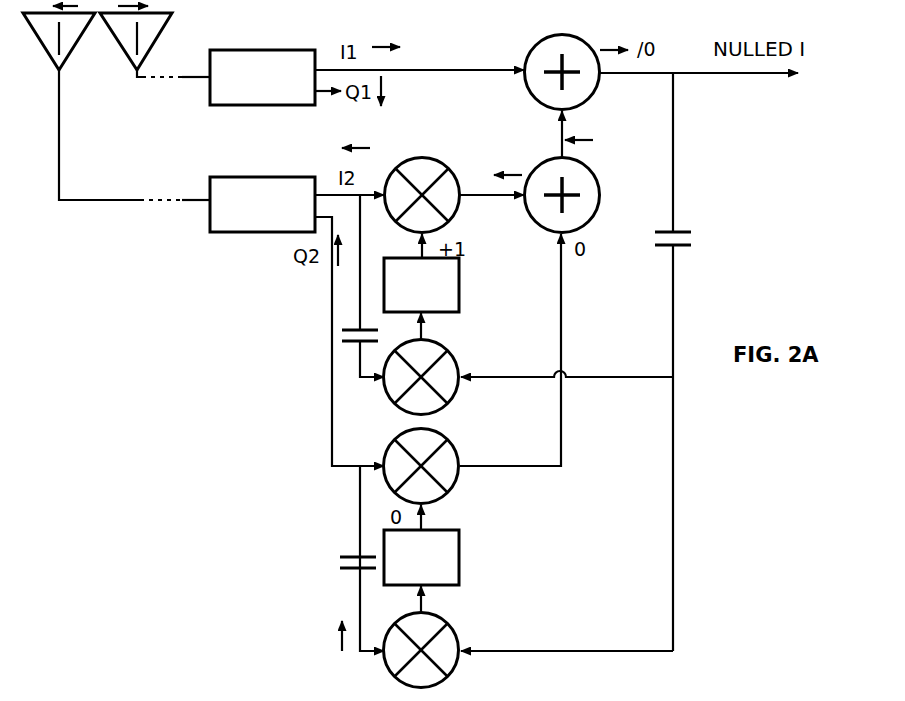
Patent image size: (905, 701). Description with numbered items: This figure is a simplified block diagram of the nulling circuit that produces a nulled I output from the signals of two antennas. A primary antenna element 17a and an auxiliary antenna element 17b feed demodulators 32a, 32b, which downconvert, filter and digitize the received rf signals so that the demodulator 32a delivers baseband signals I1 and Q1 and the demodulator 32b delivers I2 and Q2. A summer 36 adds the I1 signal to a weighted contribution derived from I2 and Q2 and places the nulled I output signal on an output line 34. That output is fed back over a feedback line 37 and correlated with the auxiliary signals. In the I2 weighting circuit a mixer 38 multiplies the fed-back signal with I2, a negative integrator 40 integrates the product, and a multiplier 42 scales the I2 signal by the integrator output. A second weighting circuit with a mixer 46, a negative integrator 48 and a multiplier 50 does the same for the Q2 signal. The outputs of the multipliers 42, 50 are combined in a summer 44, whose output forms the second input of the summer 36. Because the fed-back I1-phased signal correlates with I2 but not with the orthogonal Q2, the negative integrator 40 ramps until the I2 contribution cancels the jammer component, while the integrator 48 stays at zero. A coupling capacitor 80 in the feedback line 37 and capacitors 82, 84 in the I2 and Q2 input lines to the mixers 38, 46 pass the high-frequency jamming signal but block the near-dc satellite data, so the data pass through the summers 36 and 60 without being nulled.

The primary antenna element 17a is at (122, 60).
The auxiliary antenna element 17b is at (73, 60).
The demodulator 32a is at (228, 107).
The demodulator 32b is at (228, 234).
The nulled I output line 34 is at (690, 72).
The summer 36 is at (590, 107).
The feedback line 37 is at (673, 178).
The mixer 38 is at (447, 410).
The negative integrator 40 is at (460, 290).
The multiplier 42 is at (423, 156).
The summer 44 is at (600, 198).
The mixer 46 is at (447, 683).
The negative integrator 48 is at (460, 562).
The multiplier 50 is at (447, 498).
The summer 60 is at (558, 700).
The coupling capacitor 80 is at (686, 247).
The coupling capacitor 82 is at (344, 344).
The coupling capacitor 84 is at (343, 555).